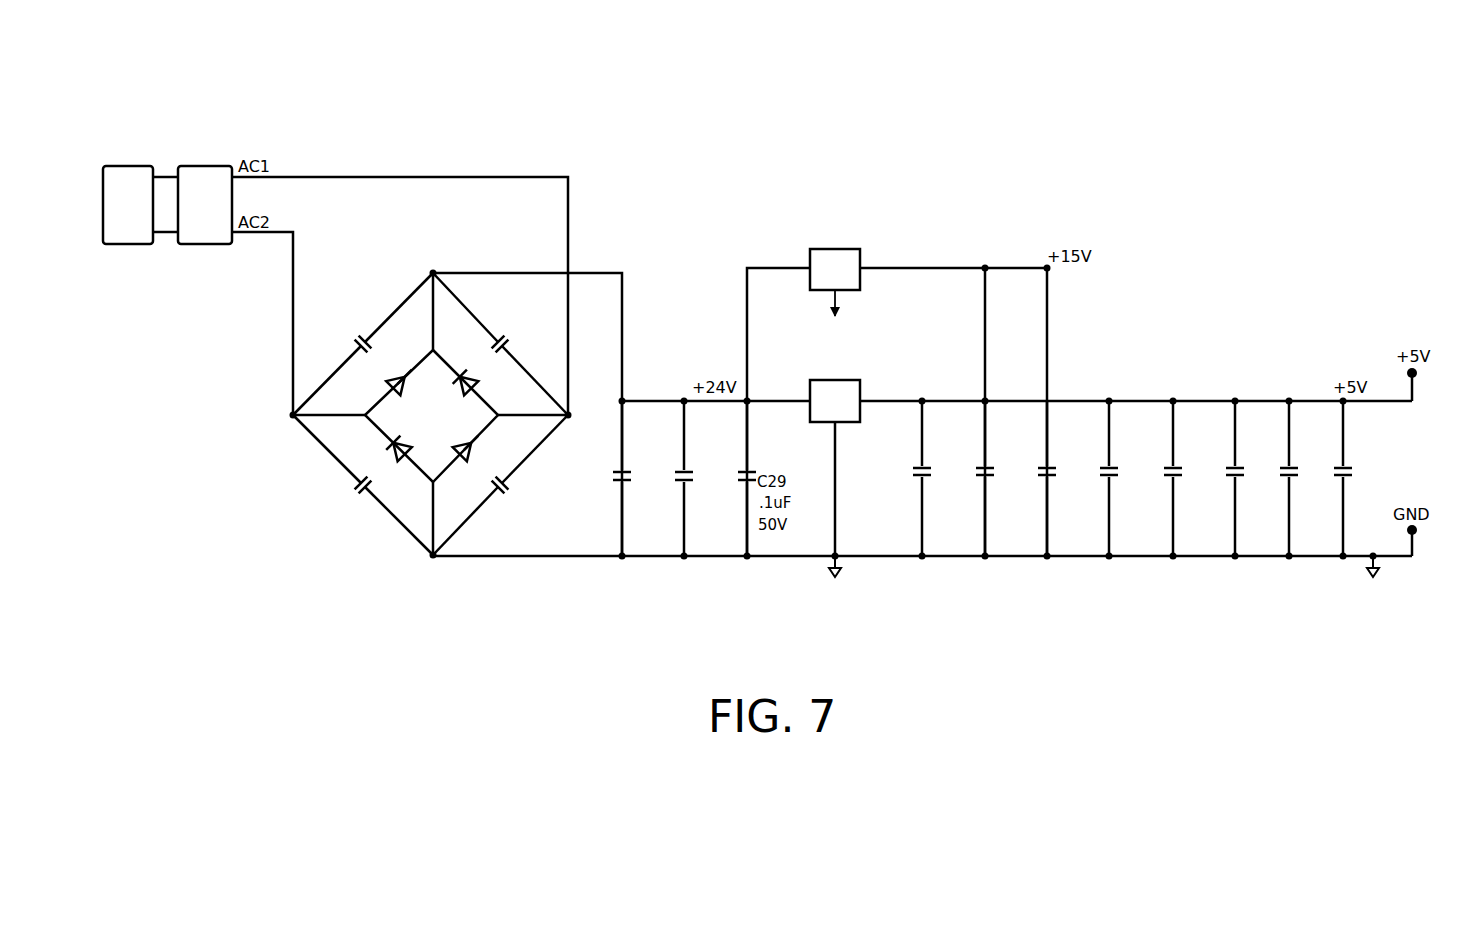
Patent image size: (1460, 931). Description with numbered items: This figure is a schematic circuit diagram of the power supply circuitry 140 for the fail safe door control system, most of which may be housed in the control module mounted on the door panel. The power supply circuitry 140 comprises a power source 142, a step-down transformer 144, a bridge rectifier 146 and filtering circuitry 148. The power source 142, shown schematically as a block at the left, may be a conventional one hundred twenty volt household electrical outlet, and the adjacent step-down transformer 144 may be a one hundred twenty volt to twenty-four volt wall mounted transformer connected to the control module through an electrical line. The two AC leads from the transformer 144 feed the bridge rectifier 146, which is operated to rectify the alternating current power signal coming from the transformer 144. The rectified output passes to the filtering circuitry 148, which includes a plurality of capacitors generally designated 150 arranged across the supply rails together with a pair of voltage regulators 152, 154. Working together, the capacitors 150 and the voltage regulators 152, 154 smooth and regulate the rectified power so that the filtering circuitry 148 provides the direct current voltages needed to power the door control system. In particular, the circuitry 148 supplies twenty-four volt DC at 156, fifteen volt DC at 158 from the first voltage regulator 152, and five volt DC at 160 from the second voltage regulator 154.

The power supply circuitry 140 is at (1018, 150).
The power source 142 is at (128, 205).
The step-down transformer 144 is at (192, 205).
The bridge rectifier 146 is at (388, 542).
The filtering circuitry 148 is at (897, 597).
The capacitors 150 is at (1062, 443).
The voltage regulator 152 is at (848, 280).
The voltage regulator 154 is at (856, 381).
The 24 volt DC output 156 is at (688, 399).
The 15 volt DC output 158 is at (985, 268).
The 5 volt DC output 160 is at (1289, 401).